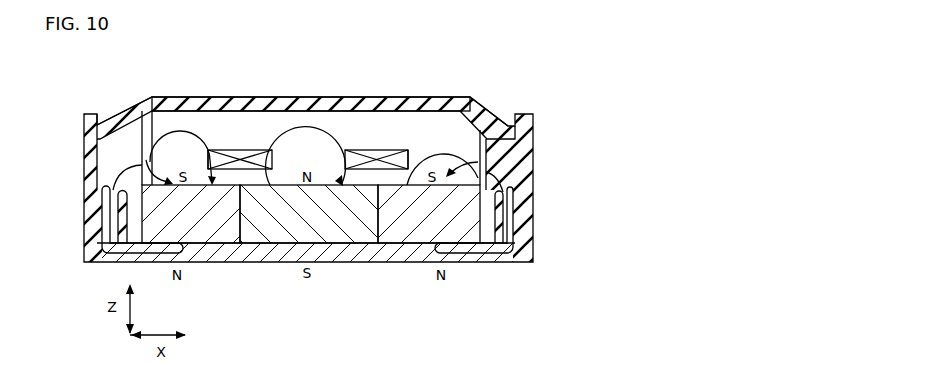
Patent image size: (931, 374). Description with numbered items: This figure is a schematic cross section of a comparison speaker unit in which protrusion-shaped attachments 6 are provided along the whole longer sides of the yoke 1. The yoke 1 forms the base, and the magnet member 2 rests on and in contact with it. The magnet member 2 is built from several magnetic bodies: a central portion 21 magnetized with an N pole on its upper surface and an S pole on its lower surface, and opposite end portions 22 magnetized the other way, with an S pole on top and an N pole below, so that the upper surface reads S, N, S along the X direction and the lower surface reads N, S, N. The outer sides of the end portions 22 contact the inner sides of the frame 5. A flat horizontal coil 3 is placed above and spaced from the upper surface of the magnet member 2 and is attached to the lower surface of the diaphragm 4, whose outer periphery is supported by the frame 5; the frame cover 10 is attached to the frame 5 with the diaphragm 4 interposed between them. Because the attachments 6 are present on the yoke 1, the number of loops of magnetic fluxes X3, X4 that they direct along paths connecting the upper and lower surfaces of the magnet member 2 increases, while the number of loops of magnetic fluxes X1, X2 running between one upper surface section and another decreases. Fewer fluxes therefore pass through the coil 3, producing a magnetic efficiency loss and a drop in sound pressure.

The frame cover 10 is at (277, 99).
The frame 5 is at (519, 160).
The diaphragm 4 is at (308, 132).
The yoke 1 is at (410, 256).
The attachment 6 is at (520, 222).
The magnet member 2 is at (311, 264).
The opposite end portions 22 is at (221, 222).
The central portion 21 is at (281, 222).
The coil 3 is at (253, 150).
The magnetic flux X1 is at (388, 160).
The magnetic flux X2 is at (224, 160).
The magnetic flux X3 is at (457, 98).
The magnetic flux X4 is at (160, 100).